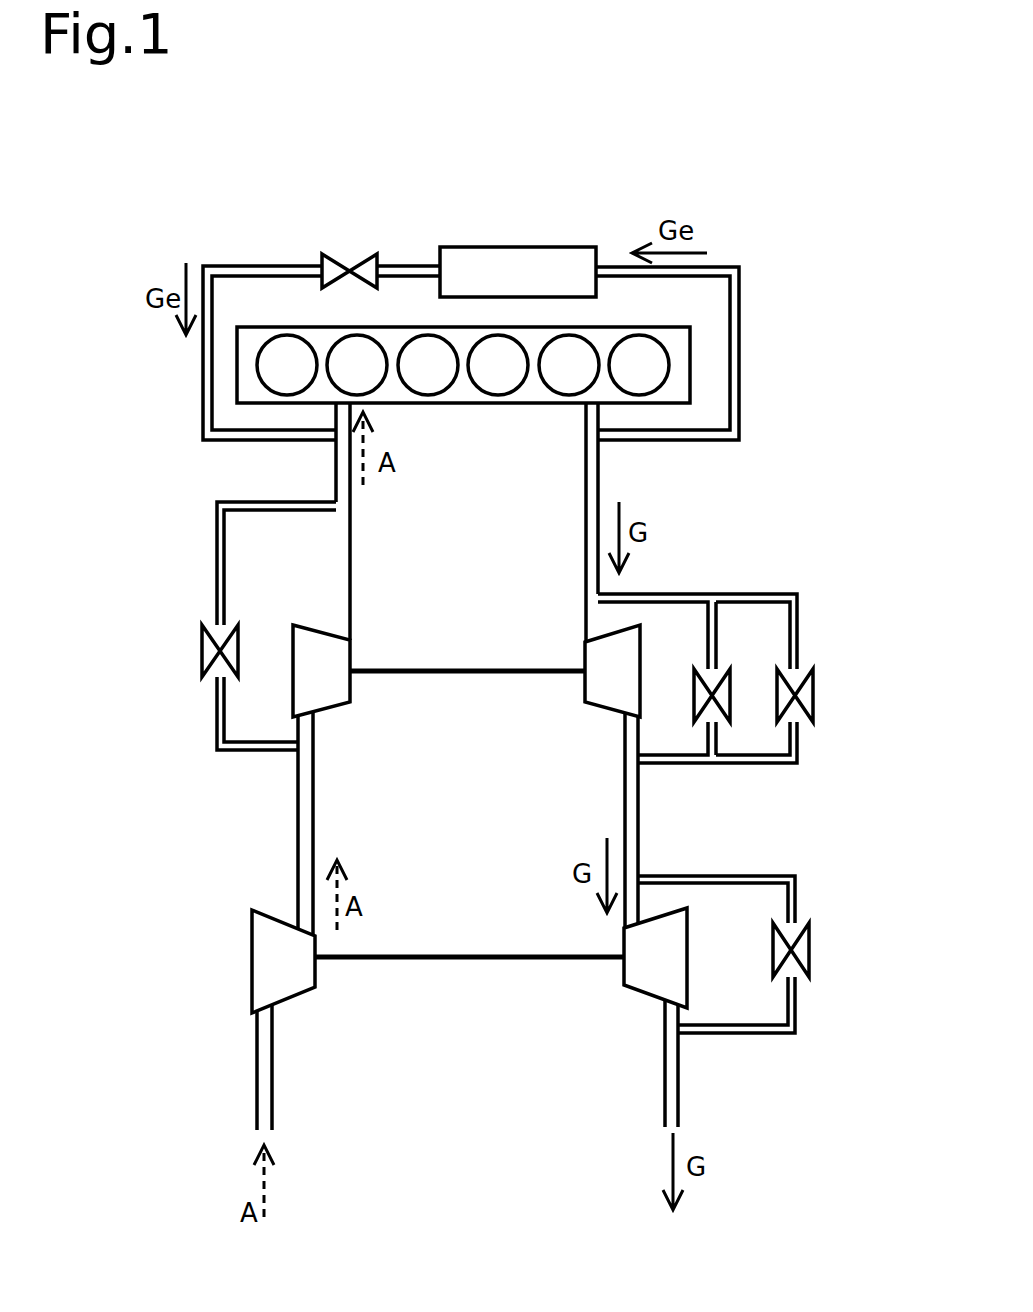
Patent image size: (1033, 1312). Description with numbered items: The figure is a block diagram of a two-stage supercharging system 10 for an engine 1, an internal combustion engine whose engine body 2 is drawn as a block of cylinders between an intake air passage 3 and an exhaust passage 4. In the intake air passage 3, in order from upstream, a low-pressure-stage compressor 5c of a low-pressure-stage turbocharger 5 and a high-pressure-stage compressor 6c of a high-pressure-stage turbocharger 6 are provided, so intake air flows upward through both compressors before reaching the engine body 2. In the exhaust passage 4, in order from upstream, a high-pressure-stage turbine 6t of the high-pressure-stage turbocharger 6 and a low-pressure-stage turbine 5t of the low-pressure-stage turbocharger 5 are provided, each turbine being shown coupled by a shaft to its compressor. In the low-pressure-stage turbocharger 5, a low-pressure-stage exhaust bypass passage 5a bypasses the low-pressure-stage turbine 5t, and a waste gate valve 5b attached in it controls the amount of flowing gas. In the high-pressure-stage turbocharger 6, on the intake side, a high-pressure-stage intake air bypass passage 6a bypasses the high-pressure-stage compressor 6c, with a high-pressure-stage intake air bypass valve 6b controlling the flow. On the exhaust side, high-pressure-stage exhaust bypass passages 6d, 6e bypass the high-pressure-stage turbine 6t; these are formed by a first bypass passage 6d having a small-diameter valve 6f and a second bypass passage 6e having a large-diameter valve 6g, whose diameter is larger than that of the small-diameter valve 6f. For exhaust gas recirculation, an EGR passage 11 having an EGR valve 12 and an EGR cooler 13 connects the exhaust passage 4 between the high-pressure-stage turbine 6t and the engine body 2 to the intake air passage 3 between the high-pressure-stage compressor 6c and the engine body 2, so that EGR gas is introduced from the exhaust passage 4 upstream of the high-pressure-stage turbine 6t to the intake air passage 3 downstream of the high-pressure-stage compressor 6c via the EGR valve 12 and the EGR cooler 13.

The engine 1 is at (774, 229).
The two-stage supercharging system 10 is at (815, 437).
The engine body 2 is at (237, 372).
The intake air passage 3 is at (257, 1059).
The exhaust passage 4 is at (598, 495).
The low-pressure-stage turbocharger 5 is at (570, 957).
The low-pressure-stage exhaust bypass passage 5a is at (793, 876).
The waste gate valve 5b is at (793, 949).
The low-pressure-stage compressor 5c is at (278, 972).
The low-pressure-stage turbine 5t is at (660, 940).
The high-pressure-stage turbocharger 6 is at (556, 667).
The high-pressure-stage intake air bypass passage 6a is at (215, 742).
The high-pressure-stage intake air bypass valve 6b is at (217, 650).
The high-pressure-stage compressor 6c is at (313, 652).
The first bypass passage 6d is at (798, 630).
The second bypass passage 6e is at (757, 603).
The small-diameter valve 6f is at (797, 693).
The large-diameter valve 6g is at (727, 682).
The high-pressure-stage turbine 6t is at (627, 665).
The EGR passage 11 is at (262, 266).
The EGR valve 12 is at (349, 270).
The EGR cooler 13 is at (497, 247).